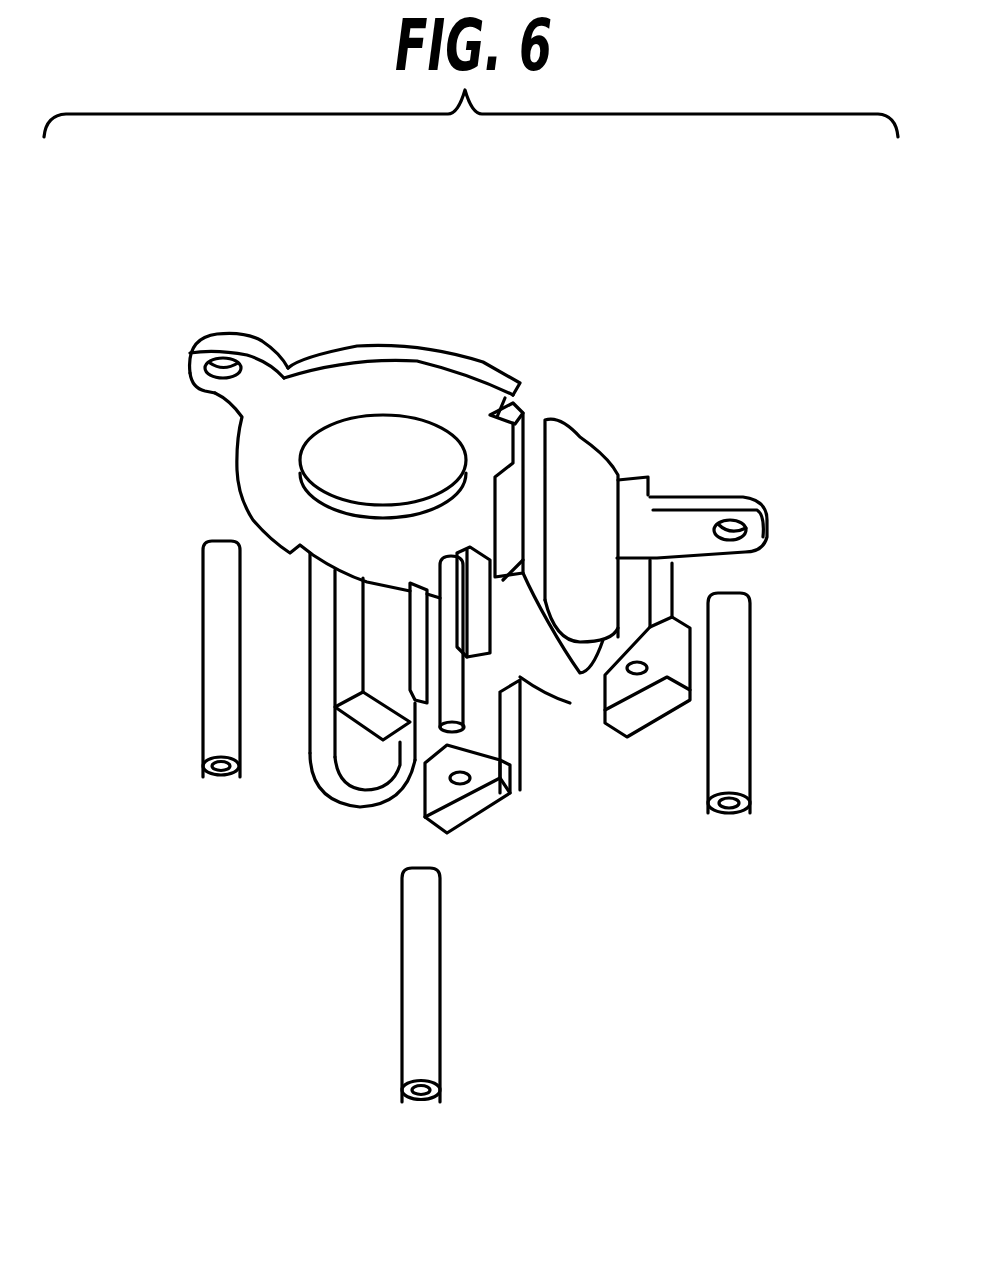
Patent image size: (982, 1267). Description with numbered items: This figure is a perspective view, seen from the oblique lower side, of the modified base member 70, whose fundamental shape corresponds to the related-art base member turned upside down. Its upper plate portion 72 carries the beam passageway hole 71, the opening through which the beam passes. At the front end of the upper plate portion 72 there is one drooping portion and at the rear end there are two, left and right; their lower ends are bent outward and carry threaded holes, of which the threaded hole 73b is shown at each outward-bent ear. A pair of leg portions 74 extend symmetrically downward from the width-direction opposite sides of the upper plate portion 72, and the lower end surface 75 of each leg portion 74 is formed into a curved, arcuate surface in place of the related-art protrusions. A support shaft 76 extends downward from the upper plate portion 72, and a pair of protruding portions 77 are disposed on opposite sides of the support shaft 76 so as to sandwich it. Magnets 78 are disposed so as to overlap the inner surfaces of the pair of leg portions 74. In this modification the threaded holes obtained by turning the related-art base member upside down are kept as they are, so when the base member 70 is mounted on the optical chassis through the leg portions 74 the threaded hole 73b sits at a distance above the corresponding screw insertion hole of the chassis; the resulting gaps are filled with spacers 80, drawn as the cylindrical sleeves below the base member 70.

The base member 70 is at (705, 432).
The beam passageway hole 71 is at (335, 450).
The upper plate portion 72 is at (353, 346).
The threaded hole 73b is at (210, 378).
The leg portion 74 is at (307, 695).
The lower end surface 75 is at (325, 783).
The support shaft 76 is at (515, 770).
The protruding portion 77 is at (475, 570).
The magnet 78 is at (510, 460).
The spacer 80 is at (202, 635).